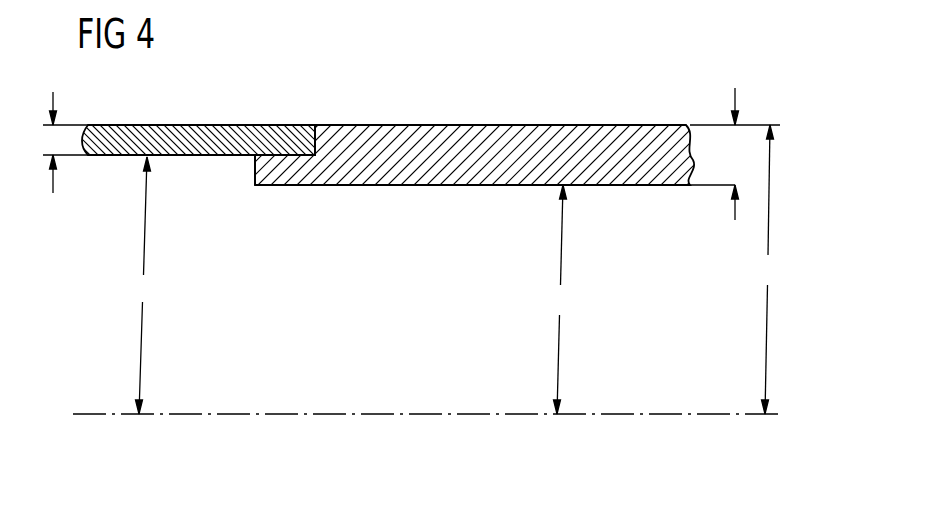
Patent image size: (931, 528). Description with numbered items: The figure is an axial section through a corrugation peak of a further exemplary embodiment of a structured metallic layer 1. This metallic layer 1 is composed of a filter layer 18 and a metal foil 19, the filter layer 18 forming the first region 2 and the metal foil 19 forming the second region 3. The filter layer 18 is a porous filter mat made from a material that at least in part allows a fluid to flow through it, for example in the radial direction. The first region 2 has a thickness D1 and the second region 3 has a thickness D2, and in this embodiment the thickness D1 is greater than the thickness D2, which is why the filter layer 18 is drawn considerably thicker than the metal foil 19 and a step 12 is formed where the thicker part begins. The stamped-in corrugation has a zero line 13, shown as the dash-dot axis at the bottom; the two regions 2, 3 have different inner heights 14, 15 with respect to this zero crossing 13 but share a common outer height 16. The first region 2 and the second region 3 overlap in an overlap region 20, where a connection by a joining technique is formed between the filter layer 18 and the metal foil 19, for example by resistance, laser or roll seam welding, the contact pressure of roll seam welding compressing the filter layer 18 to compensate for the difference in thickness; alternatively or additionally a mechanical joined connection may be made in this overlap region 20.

The metallic layer 1 is at (428, 88).
The first region 2 is at (503, 125).
The second region 3 is at (193, 125).
The step / shoulder 12 is at (253, 173).
The zero line 13 is at (497, 414).
The inner height 14 is at (562, 299).
The inner height 15 is at (143, 285).
The outer height 16 is at (772, 269).
The filter layer 18 is at (475, 185).
The metal foil 19 is at (183, 157).
The overlap region 20 is at (278, 125).
The thickness D1 is at (735, 154).
The thickness D2 is at (62, 142).